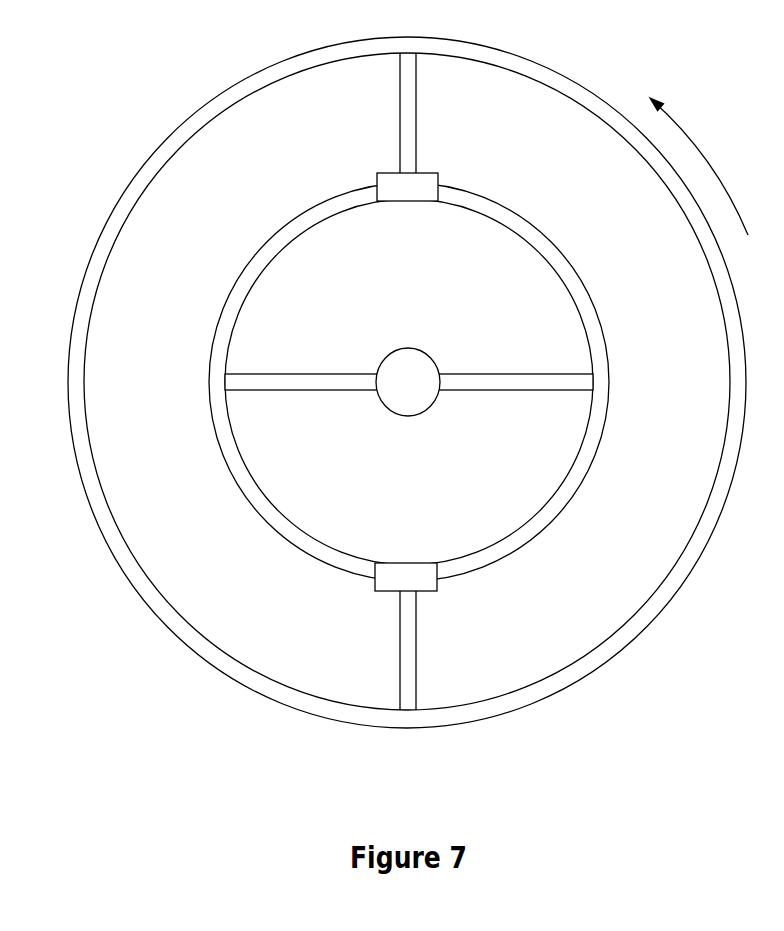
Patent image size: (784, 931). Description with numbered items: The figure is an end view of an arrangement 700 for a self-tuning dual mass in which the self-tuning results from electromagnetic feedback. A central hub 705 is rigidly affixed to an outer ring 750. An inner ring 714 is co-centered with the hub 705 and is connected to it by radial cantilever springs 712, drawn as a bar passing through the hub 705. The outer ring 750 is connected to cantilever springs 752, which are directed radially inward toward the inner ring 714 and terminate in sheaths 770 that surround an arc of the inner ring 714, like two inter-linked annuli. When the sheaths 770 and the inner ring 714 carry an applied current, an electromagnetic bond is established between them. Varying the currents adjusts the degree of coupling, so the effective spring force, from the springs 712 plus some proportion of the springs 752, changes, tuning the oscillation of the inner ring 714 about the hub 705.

The arrangement 700 is at (408, 420).
The hub 705 is at (408, 382).
The radial cantilever springs 712 is at (502, 372).
The inner ring 714 is at (276, 510).
The outer ring 750 is at (135, 557).
The cantilever springs 752 is at (417, 130).
The sheaths 770 is at (377, 175).